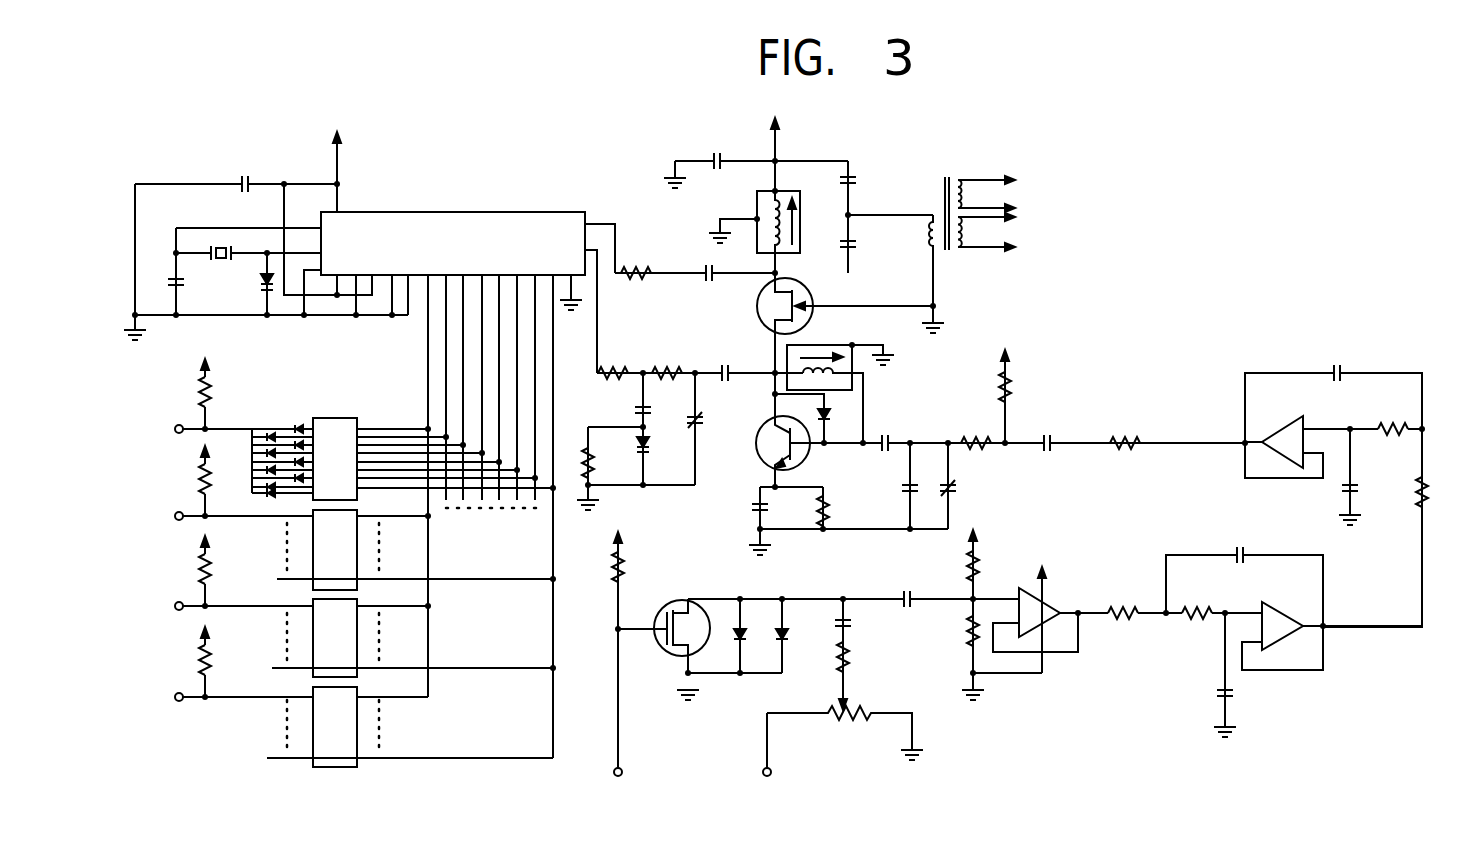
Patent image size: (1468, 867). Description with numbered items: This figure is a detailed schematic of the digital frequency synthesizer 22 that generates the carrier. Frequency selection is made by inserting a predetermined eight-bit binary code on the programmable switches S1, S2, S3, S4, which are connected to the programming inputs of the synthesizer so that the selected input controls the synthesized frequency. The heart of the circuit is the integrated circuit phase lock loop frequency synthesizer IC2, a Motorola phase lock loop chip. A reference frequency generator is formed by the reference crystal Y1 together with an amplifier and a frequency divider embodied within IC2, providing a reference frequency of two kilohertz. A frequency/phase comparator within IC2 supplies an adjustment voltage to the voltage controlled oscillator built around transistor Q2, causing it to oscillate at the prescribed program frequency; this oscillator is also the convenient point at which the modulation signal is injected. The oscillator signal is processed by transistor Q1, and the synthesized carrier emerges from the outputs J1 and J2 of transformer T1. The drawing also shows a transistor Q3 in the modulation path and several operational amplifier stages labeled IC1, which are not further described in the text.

The digital frequency synthesizer 22 is at (1055, 792).
The integrated circuit phase lock loop frequency synthesizer IC2 is at (453, 243).
The reference crystal Y1 is at (236, 230).
The programmable switch S1 is at (365, 429).
The programmable switch S2 is at (365, 518).
The programmable switch S3 is at (365, 606).
The programmable switch S4 is at (364, 697).
The transistor Q1 is at (756, 306).
The voltage controlled oscillator transistor Q2 is at (751, 448).
The modulation enable transistor Q3 is at (677, 594).
The transformer T1 is at (950, 160).
The output J1 is at (998, 194).
The output J2 is at (998, 232).
The operational amplifier IC1 is at (1200, 551).